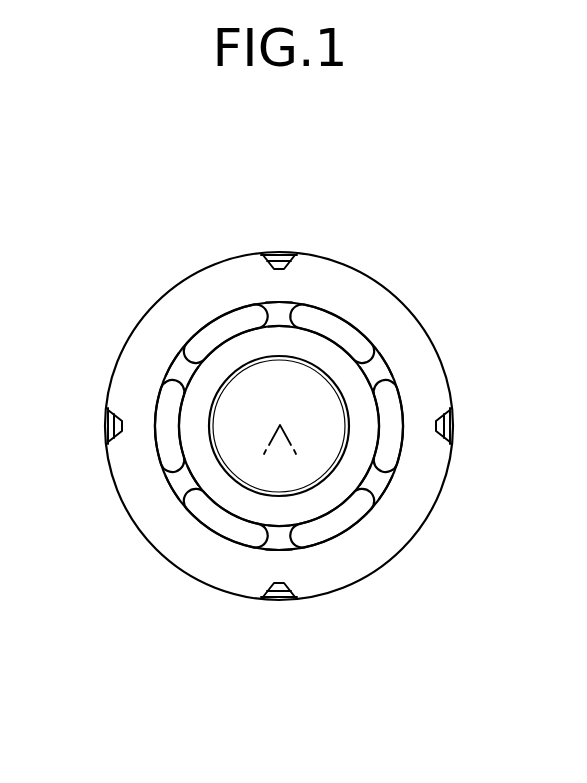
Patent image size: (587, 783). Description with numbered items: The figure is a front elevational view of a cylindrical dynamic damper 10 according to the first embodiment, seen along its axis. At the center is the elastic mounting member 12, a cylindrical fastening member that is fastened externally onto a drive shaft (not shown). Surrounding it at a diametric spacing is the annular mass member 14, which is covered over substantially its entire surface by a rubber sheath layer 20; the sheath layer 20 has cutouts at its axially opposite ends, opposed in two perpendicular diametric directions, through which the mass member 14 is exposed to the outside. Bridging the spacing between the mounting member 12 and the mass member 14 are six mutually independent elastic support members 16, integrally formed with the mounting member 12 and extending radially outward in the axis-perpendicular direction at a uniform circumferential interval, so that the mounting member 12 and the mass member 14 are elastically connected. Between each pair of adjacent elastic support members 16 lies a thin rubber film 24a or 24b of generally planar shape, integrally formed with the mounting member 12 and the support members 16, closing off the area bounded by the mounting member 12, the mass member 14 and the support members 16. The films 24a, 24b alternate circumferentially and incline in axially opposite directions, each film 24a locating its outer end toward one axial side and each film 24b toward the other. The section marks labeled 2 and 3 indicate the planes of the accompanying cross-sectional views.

The cylindrical dynamic damper 10 is at (455, 242).
The elastic mounting member 12 is at (362, 428).
The mass member 14 is at (116, 427).
The elastic support member 16 is at (278, 313).
The rubber sheath layer 20 is at (453, 425).
The thin rubber film 24a is at (343, 332).
The thin rubber film 24b is at (237, 320).
The section line II-II 2 is at (279, 216).
The section line III-III 3 is at (176, 605).